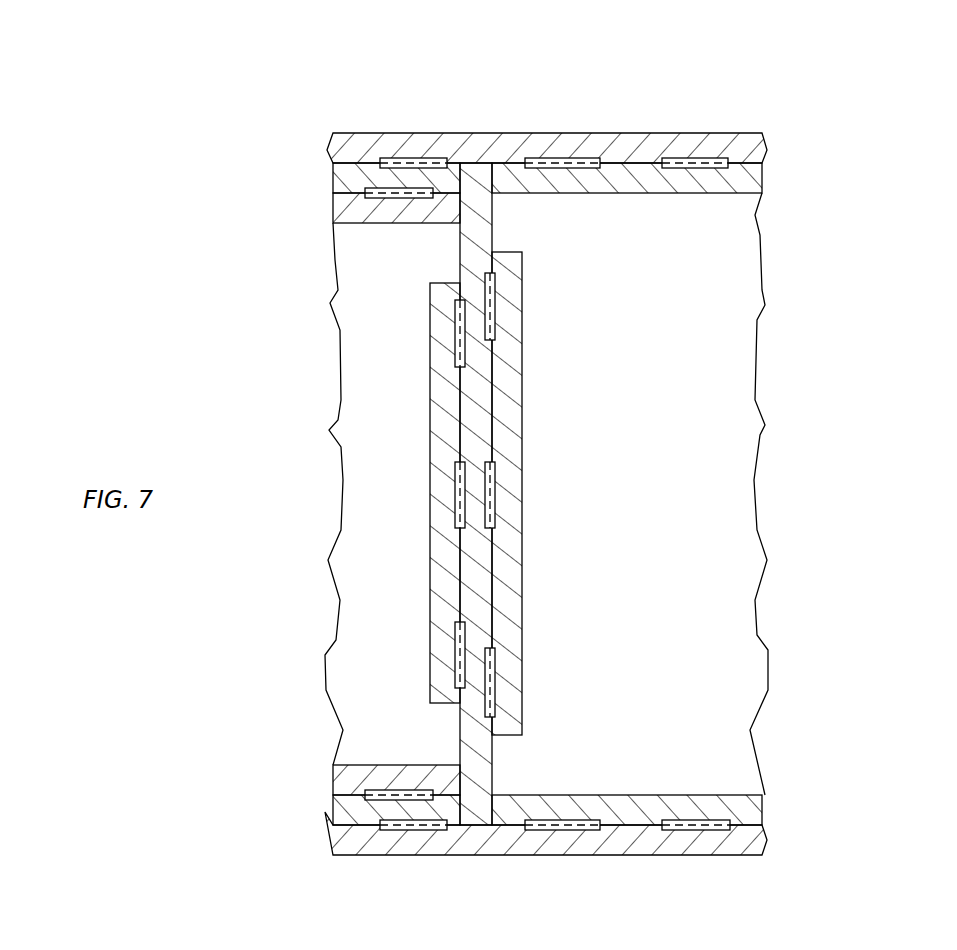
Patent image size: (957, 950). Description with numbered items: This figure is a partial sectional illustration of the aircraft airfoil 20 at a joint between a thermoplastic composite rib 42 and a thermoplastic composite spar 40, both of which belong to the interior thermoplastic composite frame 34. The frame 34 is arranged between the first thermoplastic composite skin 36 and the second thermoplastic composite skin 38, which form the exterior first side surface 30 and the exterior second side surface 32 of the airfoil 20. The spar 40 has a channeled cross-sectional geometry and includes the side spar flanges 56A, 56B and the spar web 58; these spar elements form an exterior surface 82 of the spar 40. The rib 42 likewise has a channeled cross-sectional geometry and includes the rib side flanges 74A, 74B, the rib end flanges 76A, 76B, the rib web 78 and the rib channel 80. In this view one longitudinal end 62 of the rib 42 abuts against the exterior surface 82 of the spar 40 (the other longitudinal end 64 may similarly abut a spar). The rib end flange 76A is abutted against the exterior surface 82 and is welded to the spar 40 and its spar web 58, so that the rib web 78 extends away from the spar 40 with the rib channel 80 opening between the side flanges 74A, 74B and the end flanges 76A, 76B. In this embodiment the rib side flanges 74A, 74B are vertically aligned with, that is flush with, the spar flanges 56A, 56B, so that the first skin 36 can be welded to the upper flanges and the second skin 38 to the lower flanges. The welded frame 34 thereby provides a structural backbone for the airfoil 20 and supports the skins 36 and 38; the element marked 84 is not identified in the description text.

The aircraft airfoil 20 is at (857, 97).
The exterior first side surface 30 is at (755, 133).
The exterior second side surface 32 is at (762, 855).
The thermoplastic composite frame 34 is at (316, 206).
The first thermoplastic composite skin 36 is at (727, 125).
The second thermoplastic composite skin 38 is at (696, 860).
The thermoplastic composite spar 40 is at (470, 830).
The thermoplastic composite rib 42 is at (322, 742).
The side spar flange 56A is at (363, 157).
The side spar flange 56B is at (357, 830).
The spar web 58 is at (497, 400).
The longitudinal end of rib 62 is at (493, 379).
The longitudinal end of rib 64 is at (462, 442).
The rib side flange 74A is at (380, 234).
The rib side flange 74B is at (362, 760).
The rib end flange 76A is at (530, 562).
The rib end flange 76B is at (418, 600).
The rib web 78 is at (328, 493).
The rib channel 80 is at (350, 652).
The exterior surface of spar 82 is at (494, 772).
The flange 84 is at (460, 745).